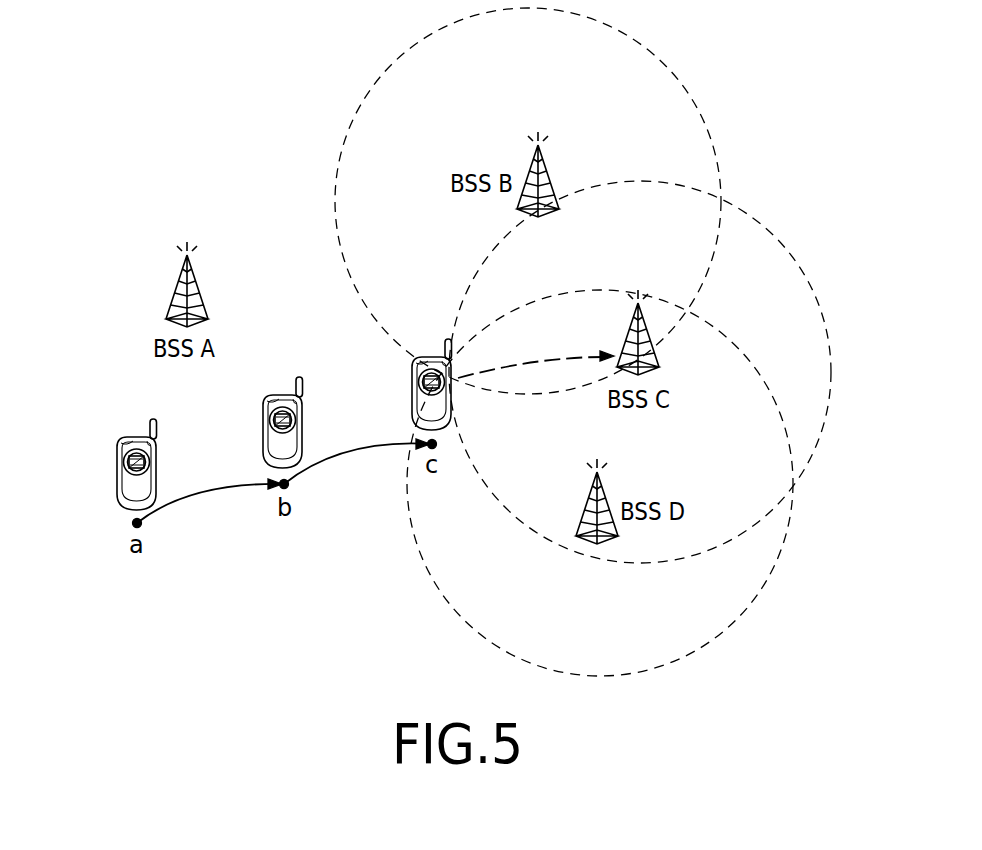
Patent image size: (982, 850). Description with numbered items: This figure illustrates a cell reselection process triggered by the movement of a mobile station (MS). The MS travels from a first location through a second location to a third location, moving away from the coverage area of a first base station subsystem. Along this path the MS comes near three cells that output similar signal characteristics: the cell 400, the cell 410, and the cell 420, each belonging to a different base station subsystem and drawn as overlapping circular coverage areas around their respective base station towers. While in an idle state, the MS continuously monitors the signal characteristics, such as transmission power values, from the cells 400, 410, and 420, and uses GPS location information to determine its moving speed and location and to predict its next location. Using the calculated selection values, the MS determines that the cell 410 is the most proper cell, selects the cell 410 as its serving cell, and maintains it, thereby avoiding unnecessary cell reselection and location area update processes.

The cell 400 is at (652, 52).
The cell 410 is at (770, 237).
The cell 420 is at (770, 573).